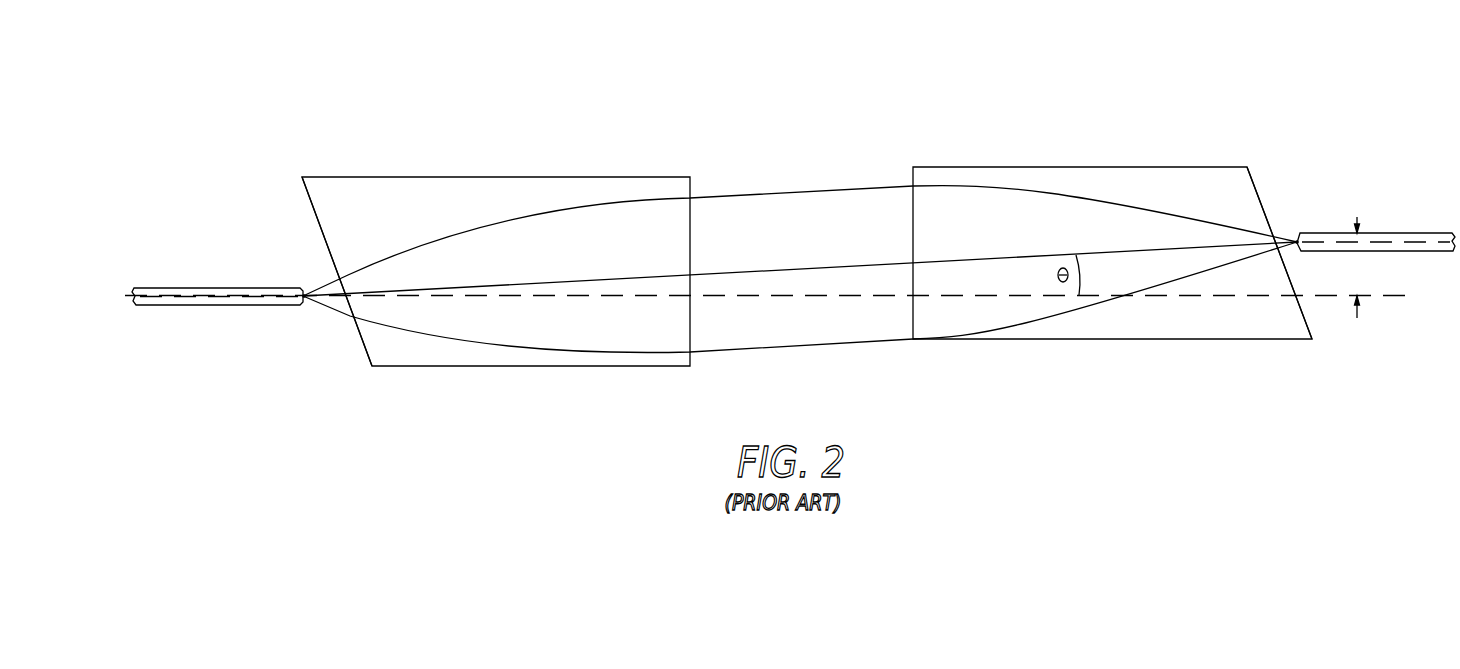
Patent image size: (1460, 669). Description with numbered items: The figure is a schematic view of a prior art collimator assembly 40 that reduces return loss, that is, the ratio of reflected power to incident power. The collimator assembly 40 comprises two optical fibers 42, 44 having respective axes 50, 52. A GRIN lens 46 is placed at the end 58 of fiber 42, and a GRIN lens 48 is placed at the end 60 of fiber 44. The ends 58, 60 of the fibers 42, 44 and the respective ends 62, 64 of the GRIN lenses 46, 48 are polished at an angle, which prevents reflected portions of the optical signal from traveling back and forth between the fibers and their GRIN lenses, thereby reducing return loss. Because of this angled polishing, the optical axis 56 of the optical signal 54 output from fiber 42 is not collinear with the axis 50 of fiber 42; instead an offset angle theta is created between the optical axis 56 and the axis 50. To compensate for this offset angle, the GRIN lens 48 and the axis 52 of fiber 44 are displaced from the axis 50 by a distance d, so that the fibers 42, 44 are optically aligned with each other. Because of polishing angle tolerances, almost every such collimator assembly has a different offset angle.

The collimator assembly 40 is at (756, 110).
The optical fiber 42 is at (203, 288).
The optical fiber 44 is at (1377, 233).
The GRIN lens 46 is at (370, 176).
The GRIN lens 48 is at (1025, 165).
The axis 50 is at (166, 306).
The axis 52 is at (1433, 247).
The optical signal 54 is at (819, 210).
The optical axis 56 is at (778, 272).
The end 58 is at (306, 288).
The end 60 is at (1296, 235).
The end 62 is at (365, 348).
The end 64 is at (1257, 182).